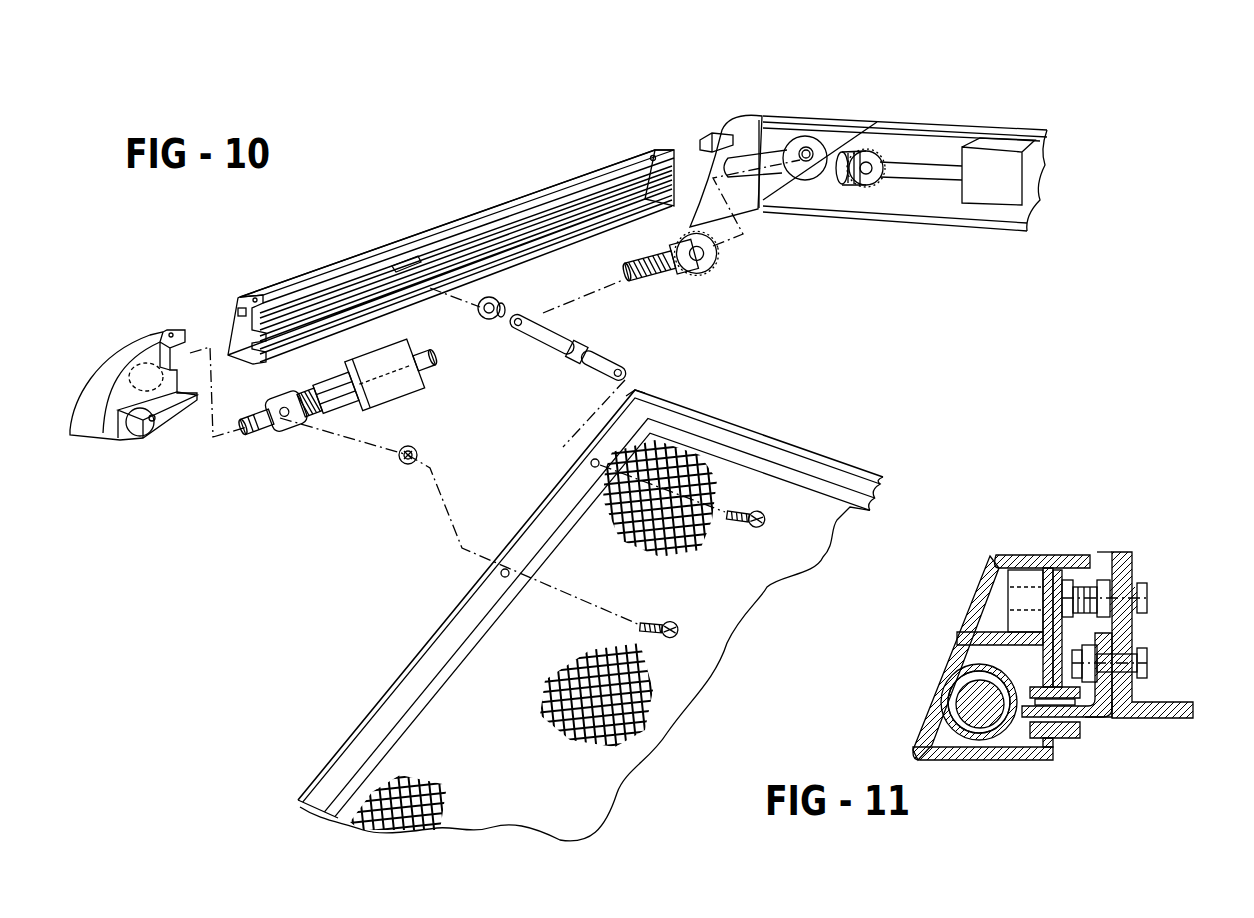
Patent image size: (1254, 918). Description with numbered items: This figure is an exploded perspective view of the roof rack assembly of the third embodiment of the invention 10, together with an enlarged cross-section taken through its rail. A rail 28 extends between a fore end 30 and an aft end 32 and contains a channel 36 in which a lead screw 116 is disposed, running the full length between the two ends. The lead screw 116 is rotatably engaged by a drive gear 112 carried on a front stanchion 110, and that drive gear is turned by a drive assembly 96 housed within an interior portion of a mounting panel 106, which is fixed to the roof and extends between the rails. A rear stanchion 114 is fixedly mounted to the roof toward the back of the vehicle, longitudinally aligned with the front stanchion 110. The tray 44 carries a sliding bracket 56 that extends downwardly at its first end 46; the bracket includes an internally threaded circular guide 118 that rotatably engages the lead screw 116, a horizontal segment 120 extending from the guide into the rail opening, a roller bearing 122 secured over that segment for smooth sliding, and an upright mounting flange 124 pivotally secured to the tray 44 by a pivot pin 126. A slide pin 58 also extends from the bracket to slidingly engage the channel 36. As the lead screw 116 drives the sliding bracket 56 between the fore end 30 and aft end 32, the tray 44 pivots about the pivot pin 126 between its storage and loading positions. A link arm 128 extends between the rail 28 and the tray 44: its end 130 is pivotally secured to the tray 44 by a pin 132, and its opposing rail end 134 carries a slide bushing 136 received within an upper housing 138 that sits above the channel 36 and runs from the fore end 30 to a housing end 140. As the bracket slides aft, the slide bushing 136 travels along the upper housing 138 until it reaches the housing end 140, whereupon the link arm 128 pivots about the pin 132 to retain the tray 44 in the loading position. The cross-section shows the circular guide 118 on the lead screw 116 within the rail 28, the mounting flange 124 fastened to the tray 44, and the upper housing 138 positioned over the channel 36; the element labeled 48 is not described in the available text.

In FIG. 10, the third embodiment of the invention 10 is at (497, 165).
In FIG. 10, the rail 28 is at (470, 215).
In FIG. 11, the rail 28 is at (945, 650).
In FIG. 10, the fore end 30 is at (650, 150).
In FIG. 10, the aft end 32 is at (265, 291).
In FIG. 10, the upper housing 138 is at (242, 313).
In FIG. 11, the upper housing 138 is at (1008, 628).
In FIG. 10, the housing end 140 is at (400, 272).
In FIG. 10, the rear stanchion 114 is at (113, 347).
In FIG. 10, the lead screw 116 is at (255, 428).
In FIG. 11, the lead screw 116 is at (980, 728).
In FIG. 10, the slide pin 58 is at (408, 399).
In FIG. 10, the rail end 134 is at (515, 322).
In FIG. 10, the link arm 128 is at (572, 352).
In FIG. 11, the link arm 128 is at (1078, 580).
In FIG. 10, the end 130 is at (622, 375).
In FIG. 10, the slide bushing 136 is at (503, 297).
In FIG. 11, the slide bushing 136 is at (1008, 605).
In FIG. 10, the drive gear 112 is at (712, 268).
In FIG. 10, the front stanchion 110 is at (733, 117).
In FIG. 10, the mounting panel 106 is at (917, 117).
In FIG. 10, the drive assembly 96 is at (873, 194).
In FIG. 10, the first end 46 is at (645, 389).
In FIG. 10, the tray 44 is at (360, 720).
In FIG. 11, the tray 44 is at (1133, 565).
In FIG. 10, the screen panel 48 is at (303, 795).
In FIG. 10, the pin 132 is at (765, 520).
In FIG. 10, the pivot pin 126 is at (672, 633).
In FIG. 11, the channel 36 is at (957, 670).
In FIG. 11, the circular guide 118 is at (945, 722).
In FIG. 11, the mounting flange 124 is at (1133, 668).
In FIG. 11, the sliding bracket 56 is at (1106, 726).
In FIG. 11, the horizontal segment 120 is at (1092, 722).
In FIG. 11, the roller bearing 122 is at (1060, 730).